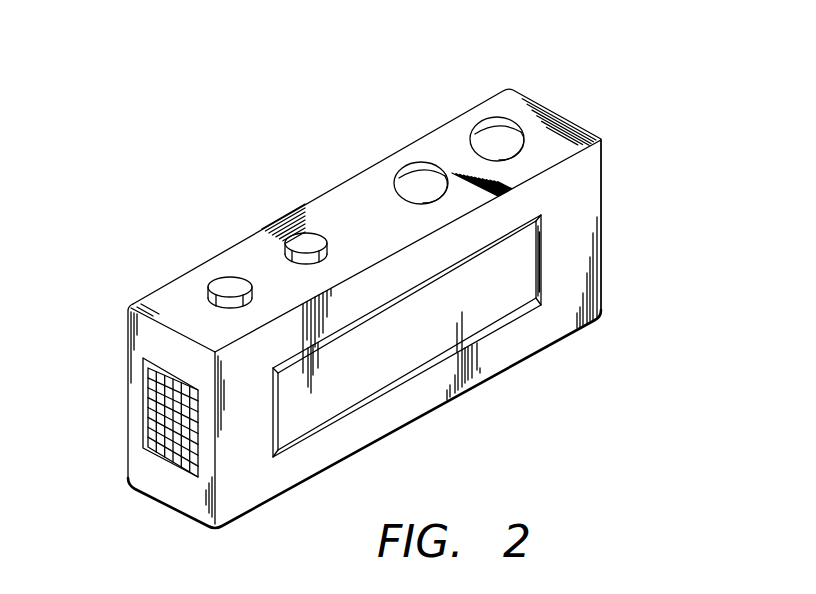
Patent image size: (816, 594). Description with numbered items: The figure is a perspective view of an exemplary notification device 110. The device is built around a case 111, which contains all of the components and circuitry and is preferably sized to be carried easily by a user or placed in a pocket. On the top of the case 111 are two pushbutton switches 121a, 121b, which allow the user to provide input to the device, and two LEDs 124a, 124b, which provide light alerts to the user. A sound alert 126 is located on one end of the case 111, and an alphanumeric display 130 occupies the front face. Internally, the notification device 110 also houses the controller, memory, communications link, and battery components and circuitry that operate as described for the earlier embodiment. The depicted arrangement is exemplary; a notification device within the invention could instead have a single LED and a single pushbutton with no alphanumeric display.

The notification device 110 is at (544, 100).
The case 111 is at (603, 227).
The pushbutton switch 121a is at (212, 277).
The pushbutton switch 121b is at (305, 237).
The LED 124a is at (415, 165).
The LED 124b is at (493, 121).
The sound alert 126 is at (166, 414).
The alphanumeric display 130 is at (352, 368).